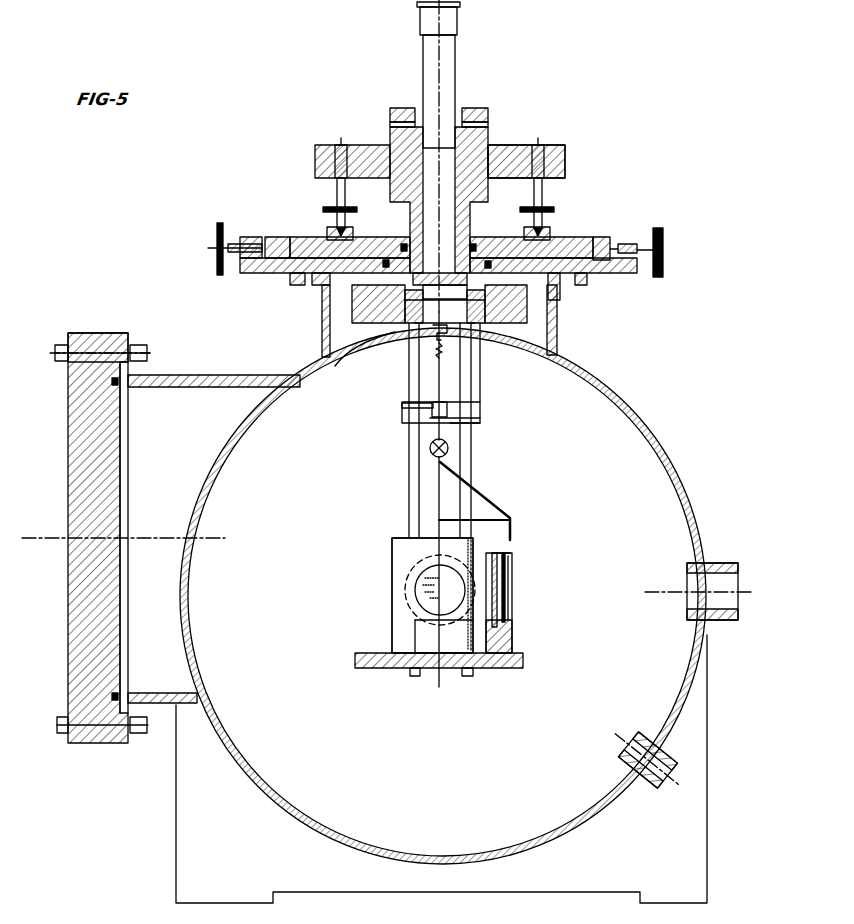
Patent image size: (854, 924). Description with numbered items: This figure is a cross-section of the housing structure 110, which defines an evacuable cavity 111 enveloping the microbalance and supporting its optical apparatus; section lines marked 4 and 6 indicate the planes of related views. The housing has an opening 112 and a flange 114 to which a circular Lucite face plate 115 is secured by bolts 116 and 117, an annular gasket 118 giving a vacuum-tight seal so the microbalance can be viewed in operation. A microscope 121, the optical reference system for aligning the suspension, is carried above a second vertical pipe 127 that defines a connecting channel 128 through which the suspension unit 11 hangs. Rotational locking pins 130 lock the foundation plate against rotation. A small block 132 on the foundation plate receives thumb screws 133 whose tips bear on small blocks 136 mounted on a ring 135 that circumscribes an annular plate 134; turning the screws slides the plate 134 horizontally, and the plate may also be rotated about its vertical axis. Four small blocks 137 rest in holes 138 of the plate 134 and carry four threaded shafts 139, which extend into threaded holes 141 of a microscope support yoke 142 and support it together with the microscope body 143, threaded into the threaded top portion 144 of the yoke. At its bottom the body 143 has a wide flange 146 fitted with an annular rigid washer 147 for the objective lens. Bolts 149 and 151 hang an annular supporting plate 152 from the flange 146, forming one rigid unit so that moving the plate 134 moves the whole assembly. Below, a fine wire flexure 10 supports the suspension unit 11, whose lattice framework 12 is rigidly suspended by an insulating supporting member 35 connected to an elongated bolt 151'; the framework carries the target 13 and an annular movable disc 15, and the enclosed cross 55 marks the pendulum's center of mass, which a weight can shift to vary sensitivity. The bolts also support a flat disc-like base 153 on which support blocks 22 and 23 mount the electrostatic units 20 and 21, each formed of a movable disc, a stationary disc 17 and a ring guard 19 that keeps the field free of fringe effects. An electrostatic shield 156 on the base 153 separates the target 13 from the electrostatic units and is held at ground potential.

The housing structure 110 is at (660, 430).
The evacuable cavity 111 is at (597, 564).
The opening 112 is at (128, 395).
The flange 114 is at (125, 341).
The Lucite face plate 115 is at (68, 444).
The bolt 116 is at (62, 348).
The bolt 117 is at (60, 722).
The annular gasket 118 is at (117, 693).
The microscope 121 is at (470, 30).
The second vertical pipe 127 is at (556, 340).
The connecting channel 128 is at (550, 348).
The rotational locking pin 130 is at (300, 284).
The small block 132 is at (246, 236).
The thumb screw 133 is at (218, 270).
The annular plate 134 is at (395, 240).
The ring 135 is at (283, 236).
The small block 136 is at (255, 236).
The small block 137 is at (548, 238).
The hole 138 is at (608, 250).
The threaded shaft 139 is at (347, 199).
The threaded hole 141 is at (540, 152).
The microscope support yoke 142 is at (505, 147).
The microscope body 143 is at (470, 138).
The threaded top portion 144 is at (468, 112).
The wide flange 146 is at (352, 300).
The annular rigid washer 147 is at (398, 322).
The bolt 149 is at (408, 382).
The bolt 151 is at (469, 409).
The elongated bolt 151' is at (491, 430).
The annular supporting plate 152 is at (361, 358).
The flat disc-like base 153 is at (523, 662).
The electrostatic shield 156 is at (392, 540).
The fine wire flexure 10 is at (430, 440).
The suspension unit 11 is at (432, 488).
The lattice framework 12 is at (490, 508).
The target 13 is at (418, 590).
The movable disc 15 is at (506, 602).
The stationary disc 17 is at (496, 560).
The ring guard 19 is at (506, 560).
The electrostatic unit 20 is at (388, 572).
The electrostatic unit 21 is at (514, 614).
The support block 22 is at (420, 633).
The support block 23 is at (512, 636).
The insulating supporting member 35 is at (480, 424).
The enclosed cross 55 is at (448, 452).
The section line 4- 4 is at (164, 255).
The section line 6- 6 is at (647, 220).